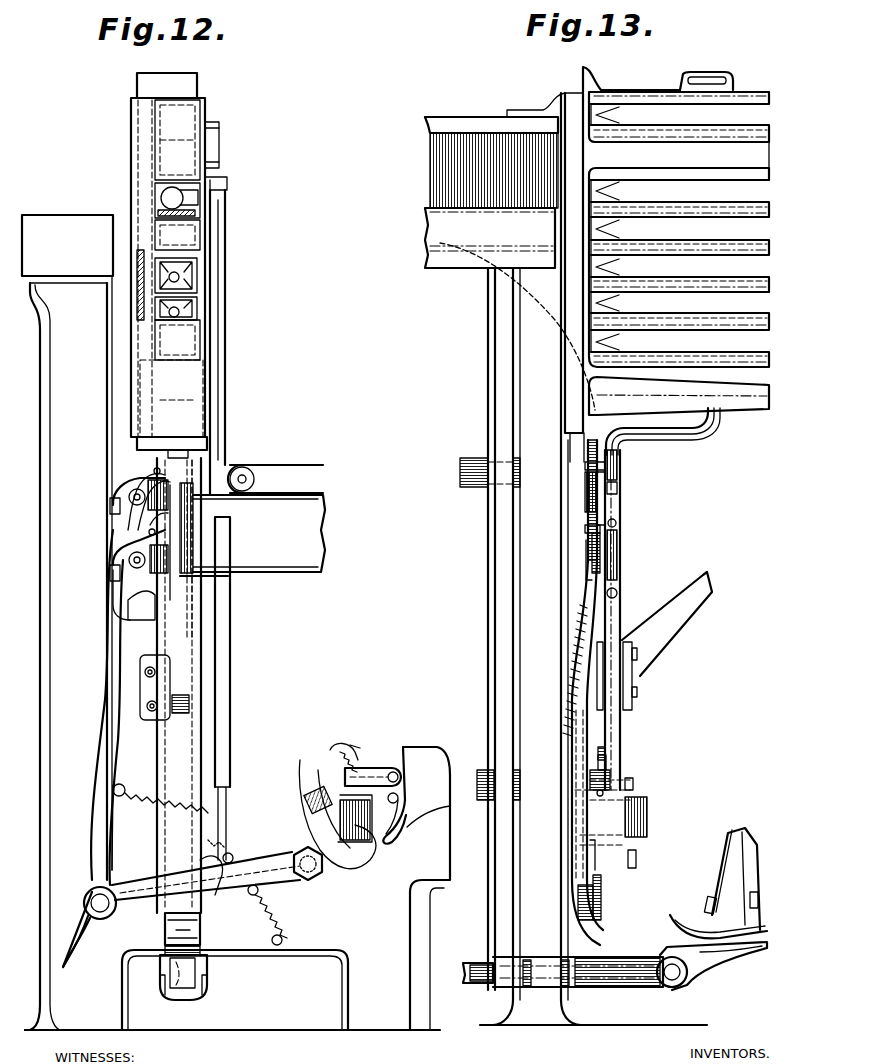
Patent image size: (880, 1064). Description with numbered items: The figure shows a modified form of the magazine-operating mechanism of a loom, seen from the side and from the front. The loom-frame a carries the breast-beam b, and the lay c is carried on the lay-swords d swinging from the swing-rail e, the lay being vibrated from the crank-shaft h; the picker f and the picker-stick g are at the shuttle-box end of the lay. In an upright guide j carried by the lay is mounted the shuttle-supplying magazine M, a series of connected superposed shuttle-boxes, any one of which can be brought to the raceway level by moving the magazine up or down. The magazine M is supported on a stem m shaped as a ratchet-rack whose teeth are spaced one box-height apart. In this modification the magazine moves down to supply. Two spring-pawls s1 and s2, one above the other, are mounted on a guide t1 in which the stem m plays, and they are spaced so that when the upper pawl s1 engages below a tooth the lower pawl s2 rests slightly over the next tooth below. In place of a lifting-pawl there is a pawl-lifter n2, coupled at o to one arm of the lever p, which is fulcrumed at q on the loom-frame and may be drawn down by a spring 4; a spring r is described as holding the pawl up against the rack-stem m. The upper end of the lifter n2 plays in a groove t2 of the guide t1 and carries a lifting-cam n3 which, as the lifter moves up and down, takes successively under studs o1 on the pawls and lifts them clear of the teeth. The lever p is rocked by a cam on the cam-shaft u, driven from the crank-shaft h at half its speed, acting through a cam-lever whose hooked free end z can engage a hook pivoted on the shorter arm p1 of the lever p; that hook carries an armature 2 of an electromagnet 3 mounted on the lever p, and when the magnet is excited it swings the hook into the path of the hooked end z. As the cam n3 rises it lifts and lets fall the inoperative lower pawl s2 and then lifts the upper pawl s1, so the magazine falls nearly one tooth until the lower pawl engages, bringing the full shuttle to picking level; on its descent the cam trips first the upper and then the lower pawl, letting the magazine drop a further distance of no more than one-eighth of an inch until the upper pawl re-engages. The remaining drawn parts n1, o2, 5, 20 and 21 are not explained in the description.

In FIG. 12, the loom-frame a is at (237, 653).
In FIG. 13, the loom-frame a is at (593, 559).
In FIG. 12, the breast-beam b is at (67, 249).
In FIG. 13, the breast-beam b is at (510, 309).
In FIG. 13, the lay c is at (425, 200).
In FIG. 12, the lay-swords d is at (218, 452).
In FIG. 13, the lay-swords d is at (490, 562).
In FIG. 12, the swing-rail e is at (172, 985).
In FIG. 13, the swing-rail e is at (477, 968).
In FIG. 12, the picker f is at (200, 198).
In FIG. 12, the picker-stick g is at (215, 322).
In FIG. 13, the picker-stick g is at (728, 848).
In FIG. 13, the crank-shaft h is at (468, 462).
In FIG. 13, the upright guide j is at (667, 277).
In FIG. 12, the stem m is at (130, 493).
In FIG. 13, the stem m is at (680, 437).
In FIG. 13, the shuttle-supplying magazine M is at (593, 79).
In FIG. 12, the arm tip n1 is at (62, 960).
In FIG. 13, the arm tip n1 is at (604, 958).
In FIG. 12, the pawl-lifter n2 is at (100, 740).
In FIG. 13, the pawl-lifter n2 is at (572, 735).
In FIG. 12, the lifting-cam n3 is at (193, 550).
In FIG. 13, the lifting-cam n3 is at (592, 540).
In FIG. 12, the coupling of pawl to lever o is at (96, 900).
In FIG. 13, the coupling of pawl to lever o is at (585, 895).
In FIG. 12, the studs o1 is at (160, 470).
In FIG. 13, the studs o1 is at (585, 530).
In FIG. 12, the pin o2 is at (147, 527).
In FIG. 12, the lever p is at (273, 868).
In FIG. 12, the shorter arm of lever p1 is at (368, 765).
In FIG. 12, the fulcrum q is at (320, 876).
In FIG. 12, the spring r is at (168, 822).
In FIG. 12, the upper spring-pawl s1 is at (148, 478).
In FIG. 13, the upper spring-pawl s1 is at (618, 490).
In FIG. 12, the lower spring-pawl s2 is at (140, 556).
In FIG. 13, the lower spring-pawl s2 is at (617, 560).
In FIG. 13, the guide t1 is at (620, 535).
In FIG. 12, the groove t2 is at (193, 510).
In FIG. 13, the groove t2 is at (585, 478).
In FIG. 13, the cam-shaft u is at (482, 773).
In FIG. 12, the hooked end of cam-lever z is at (423, 805).
In FIG. 12, the armature 2 is at (350, 805).
In FIG. 13, the armature 2 is at (633, 785).
In FIG. 12, the electromagnet 3 is at (355, 818).
In FIG. 13, the electromagnet 3 is at (645, 818).
In FIG. 12, the spring 4 is at (282, 934).
In FIG. 13, the comb teeth 5 is at (679, 229).
In FIG. 13, the tab 20 is at (683, 82).
In FIG. 12, the top block 21 is at (200, 80).